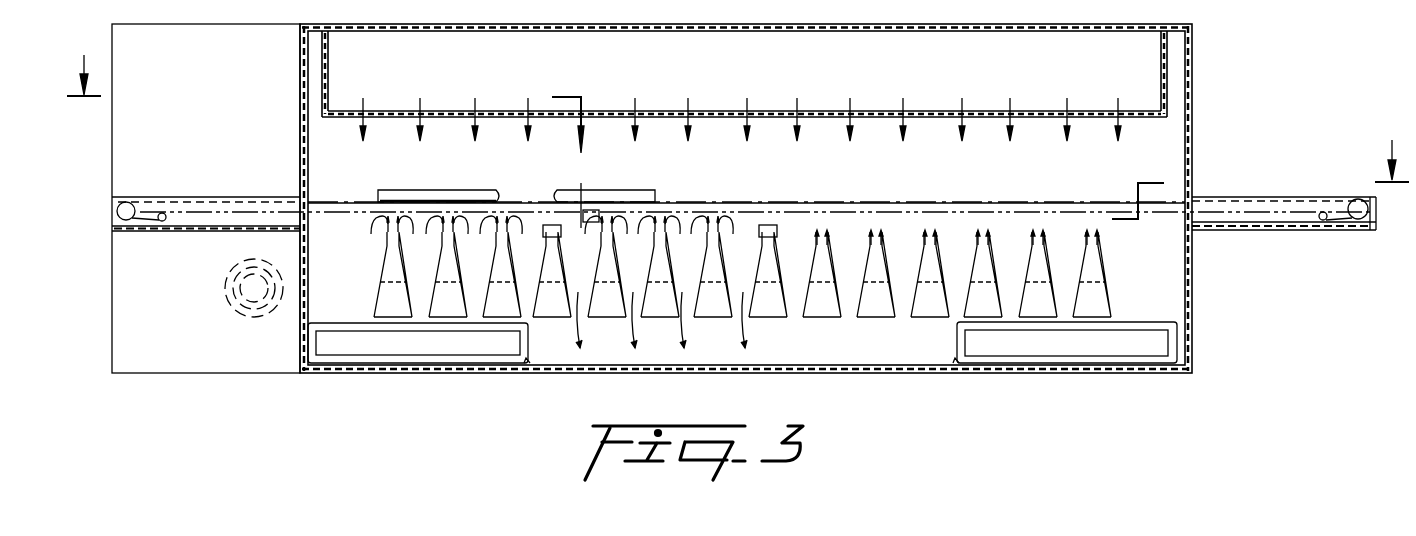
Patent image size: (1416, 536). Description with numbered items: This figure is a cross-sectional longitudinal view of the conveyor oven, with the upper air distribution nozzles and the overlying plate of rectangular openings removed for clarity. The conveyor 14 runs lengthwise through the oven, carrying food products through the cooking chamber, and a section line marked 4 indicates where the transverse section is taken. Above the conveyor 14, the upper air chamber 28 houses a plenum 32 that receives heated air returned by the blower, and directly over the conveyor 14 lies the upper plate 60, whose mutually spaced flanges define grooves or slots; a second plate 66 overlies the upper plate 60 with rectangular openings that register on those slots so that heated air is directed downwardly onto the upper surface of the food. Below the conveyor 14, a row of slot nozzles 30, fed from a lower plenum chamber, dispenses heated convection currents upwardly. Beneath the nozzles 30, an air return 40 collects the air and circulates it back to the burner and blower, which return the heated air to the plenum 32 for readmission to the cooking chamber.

The section line of FIG. 4 is at (738, 135).
The conveyor 14 is at (1297, 196).
The upper air chamber 28 is at (1166, 75).
The slot nozzles 30 is at (870, 250).
The plenum 32 is at (776, 69).
The air return 40 is at (887, 356).
The upper plate 60 is at (1096, 120).
The second plate 66 is at (1090, 117).